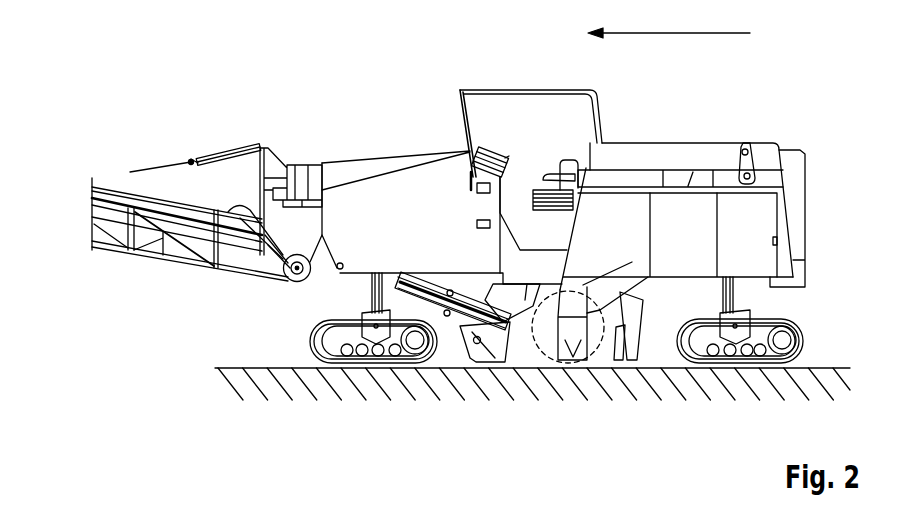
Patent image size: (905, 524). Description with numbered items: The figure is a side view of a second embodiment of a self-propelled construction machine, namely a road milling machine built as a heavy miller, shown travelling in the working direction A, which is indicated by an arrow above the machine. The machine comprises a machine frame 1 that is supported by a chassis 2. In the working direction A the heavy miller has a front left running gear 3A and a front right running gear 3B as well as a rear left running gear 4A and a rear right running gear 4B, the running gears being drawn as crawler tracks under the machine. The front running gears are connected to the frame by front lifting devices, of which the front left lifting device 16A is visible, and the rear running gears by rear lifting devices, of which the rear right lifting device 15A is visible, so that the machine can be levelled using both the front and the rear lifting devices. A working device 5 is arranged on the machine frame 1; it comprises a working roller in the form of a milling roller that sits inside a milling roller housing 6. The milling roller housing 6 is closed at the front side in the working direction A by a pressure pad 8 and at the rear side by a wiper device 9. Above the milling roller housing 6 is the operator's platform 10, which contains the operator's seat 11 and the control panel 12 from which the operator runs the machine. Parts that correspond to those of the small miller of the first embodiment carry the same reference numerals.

The machine frame 1 is at (815, 133).
The chassis 2 is at (272, 333).
The front left running gear 3A is at (360, 382).
The front right running gear 3B is at (337, 365).
The rear left running gear 4A is at (740, 381).
The rear right running gear 4B is at (773, 365).
The working device 5 is at (569, 388).
The milling roller housing 6 is at (530, 365).
The pressure pad 8 is at (487, 365).
The wiper device 9 is at (636, 366).
The operator's platform 10 is at (524, 105).
The operator's seat 11 is at (552, 168).
The control panel 12 is at (470, 150).
The rear right lifting device 15A is at (740, 293).
The front left lifting device 16A is at (372, 295).
The working direction A is at (660, 45).